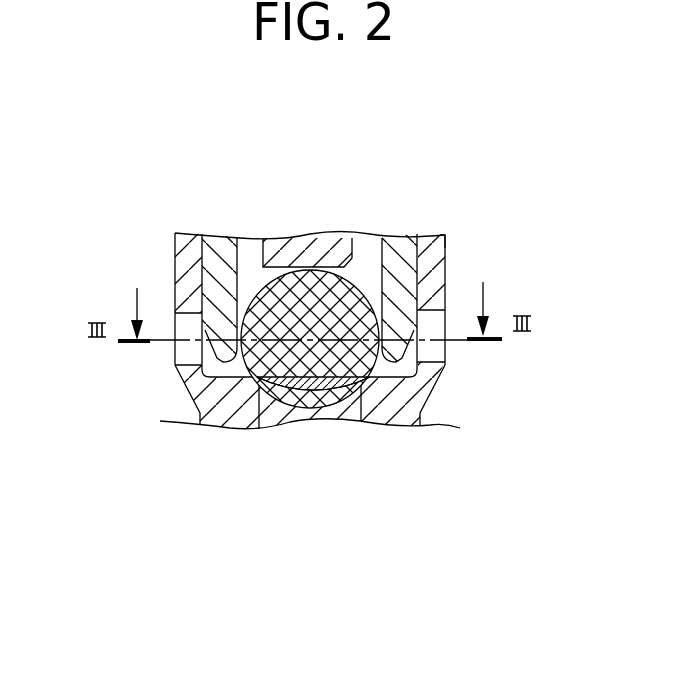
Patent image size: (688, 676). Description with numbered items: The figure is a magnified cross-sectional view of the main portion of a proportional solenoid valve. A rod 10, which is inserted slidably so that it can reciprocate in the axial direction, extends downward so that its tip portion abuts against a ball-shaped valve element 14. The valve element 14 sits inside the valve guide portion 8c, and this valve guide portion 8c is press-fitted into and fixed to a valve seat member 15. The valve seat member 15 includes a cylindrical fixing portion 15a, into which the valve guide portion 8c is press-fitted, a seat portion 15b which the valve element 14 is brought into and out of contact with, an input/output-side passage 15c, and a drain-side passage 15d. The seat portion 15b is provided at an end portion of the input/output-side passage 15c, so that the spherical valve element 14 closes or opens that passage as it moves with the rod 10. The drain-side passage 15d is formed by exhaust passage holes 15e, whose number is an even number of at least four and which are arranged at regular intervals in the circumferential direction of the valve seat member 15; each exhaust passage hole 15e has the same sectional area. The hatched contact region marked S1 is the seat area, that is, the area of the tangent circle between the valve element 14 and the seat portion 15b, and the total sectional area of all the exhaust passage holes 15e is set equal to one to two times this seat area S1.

The rod 10 is at (320, 242).
The valve element 14 is at (368, 258).
The valve seat member 15 is at (447, 382).
The cylindrical fixing portion 15a is at (447, 272).
The seat portion 15b is at (423, 393).
The input/output-side passage 15c is at (298, 418).
The drain-side passage 15d is at (166, 288).
The exhaust passage holes 15e is at (188, 352).
The valve guide portion 8c is at (447, 247).
The seat area S1 is at (262, 389).